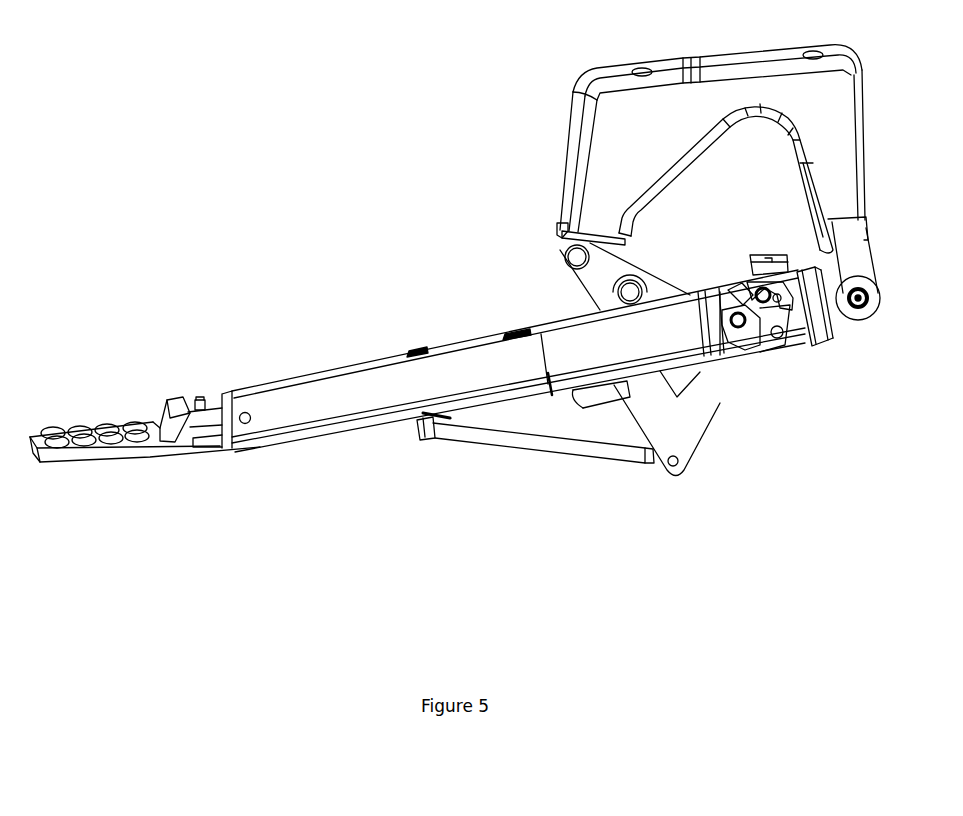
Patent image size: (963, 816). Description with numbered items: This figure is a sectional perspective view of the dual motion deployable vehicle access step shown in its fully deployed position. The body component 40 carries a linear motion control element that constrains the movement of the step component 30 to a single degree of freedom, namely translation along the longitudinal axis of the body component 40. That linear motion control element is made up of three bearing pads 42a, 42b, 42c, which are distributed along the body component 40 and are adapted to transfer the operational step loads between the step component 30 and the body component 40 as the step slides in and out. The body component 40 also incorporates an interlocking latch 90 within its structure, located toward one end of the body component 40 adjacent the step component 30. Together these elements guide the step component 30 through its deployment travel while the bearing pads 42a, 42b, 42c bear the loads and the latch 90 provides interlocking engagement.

The step component 30 is at (297, 410).
The body component 40 is at (578, 345).
The bearing pad 42a is at (425, 420).
The bearing pad 42b is at (422, 350).
The bearing pad 42c is at (515, 337).
The interlocking latch 90 is at (770, 362).